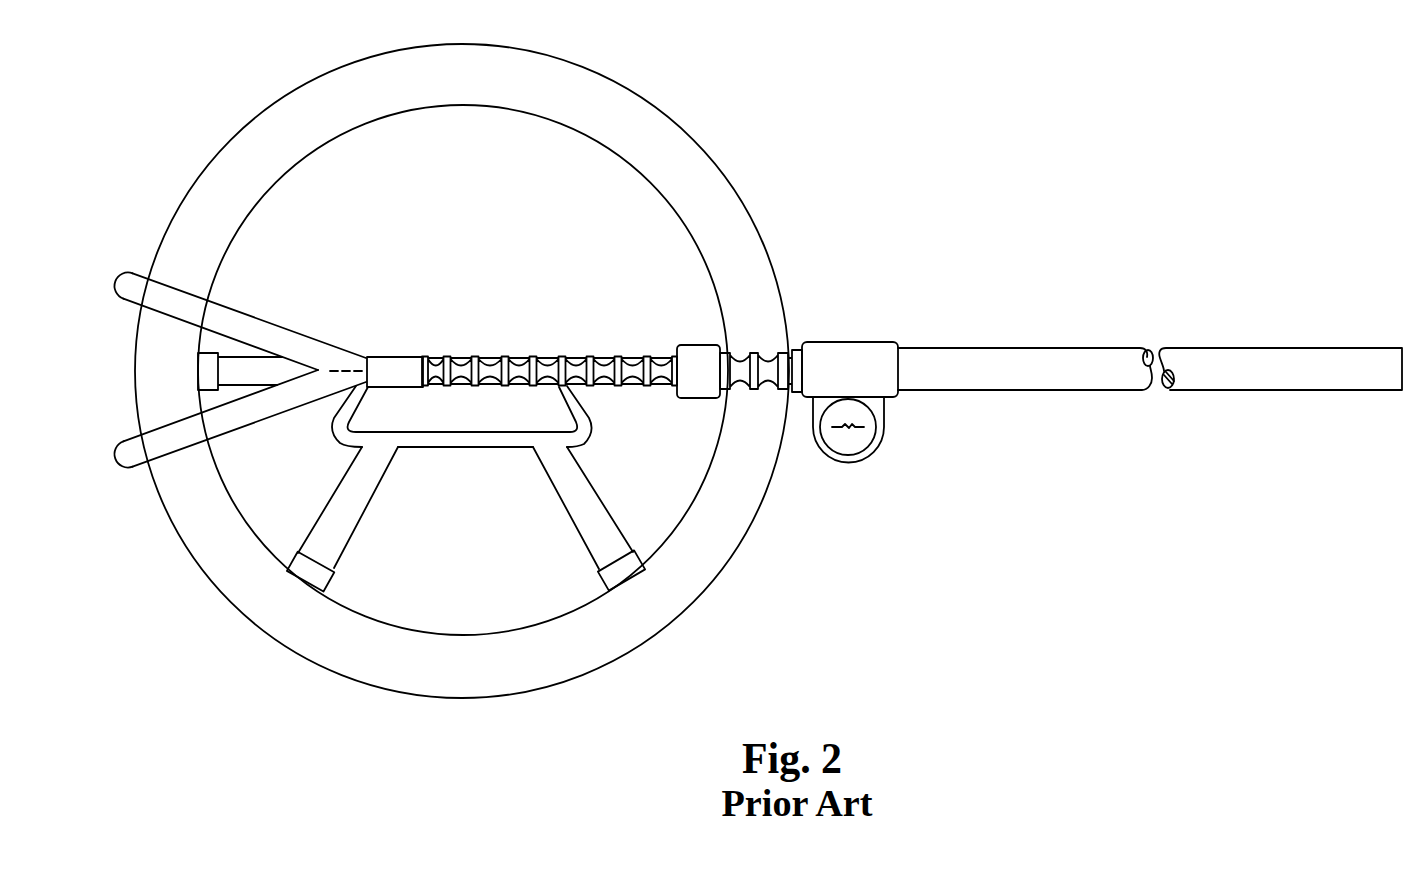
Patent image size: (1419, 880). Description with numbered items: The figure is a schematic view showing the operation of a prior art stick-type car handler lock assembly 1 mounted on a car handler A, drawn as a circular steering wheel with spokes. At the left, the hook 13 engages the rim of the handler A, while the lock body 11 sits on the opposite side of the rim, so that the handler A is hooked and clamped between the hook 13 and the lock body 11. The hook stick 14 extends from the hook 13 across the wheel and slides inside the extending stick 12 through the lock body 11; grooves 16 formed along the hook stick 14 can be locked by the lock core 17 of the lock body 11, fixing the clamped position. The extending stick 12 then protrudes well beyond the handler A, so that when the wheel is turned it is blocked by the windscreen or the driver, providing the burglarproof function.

The car handler A is at (653, 117).
The car handler lock assembly 1 is at (1187, 336).
The lock body 11 is at (840, 360).
The extending stick 12 is at (1001, 346).
The hook 13 is at (272, 402).
The hook stick 14 is at (563, 358).
The grooves 16 is at (520, 357).
The lock core 17 is at (850, 448).